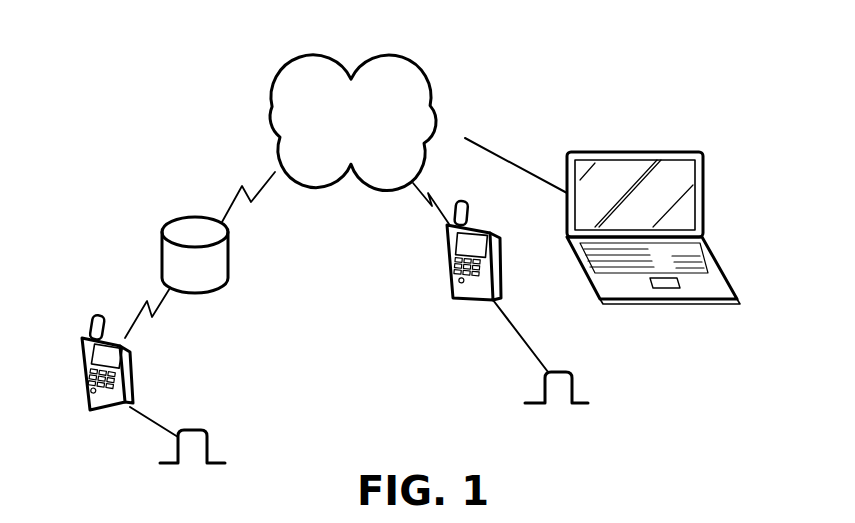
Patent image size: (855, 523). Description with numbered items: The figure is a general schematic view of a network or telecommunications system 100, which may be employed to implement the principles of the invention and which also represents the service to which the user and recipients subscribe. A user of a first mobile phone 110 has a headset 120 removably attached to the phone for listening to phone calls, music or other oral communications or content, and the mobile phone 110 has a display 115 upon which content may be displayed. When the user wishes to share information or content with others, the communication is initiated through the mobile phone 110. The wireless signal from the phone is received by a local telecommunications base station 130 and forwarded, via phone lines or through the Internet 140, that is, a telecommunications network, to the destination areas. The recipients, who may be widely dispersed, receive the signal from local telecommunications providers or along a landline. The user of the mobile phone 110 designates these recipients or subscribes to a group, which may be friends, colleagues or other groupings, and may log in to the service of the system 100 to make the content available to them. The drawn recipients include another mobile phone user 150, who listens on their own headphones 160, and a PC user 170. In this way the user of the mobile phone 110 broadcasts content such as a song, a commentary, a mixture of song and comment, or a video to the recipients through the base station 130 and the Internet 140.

The telecommunications system 100 is at (342, 380).
The first mobile phone 110 is at (138, 356).
The display 115 is at (93, 353).
The headset 120 is at (170, 452).
The local telecommunications base station 130 is at (228, 248).
The Internet 140 is at (285, 66).
The another mobile phone user 150 is at (448, 268).
The headphones 160 is at (577, 387).
The PC user 170 is at (703, 212).